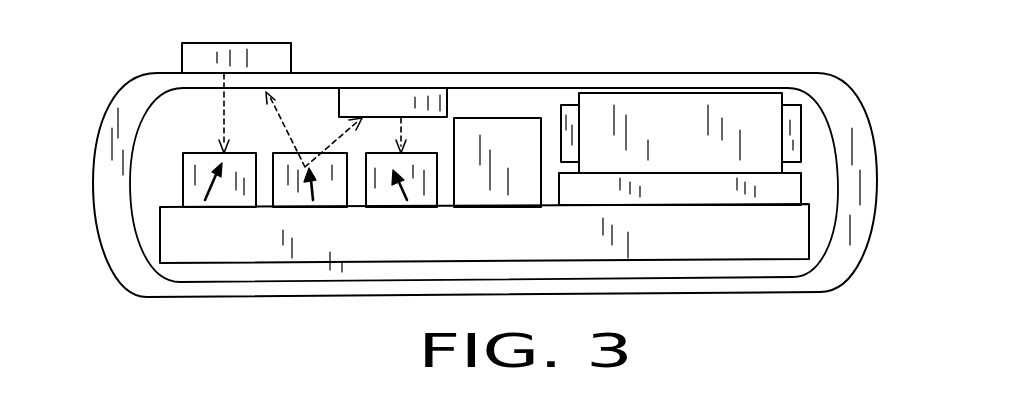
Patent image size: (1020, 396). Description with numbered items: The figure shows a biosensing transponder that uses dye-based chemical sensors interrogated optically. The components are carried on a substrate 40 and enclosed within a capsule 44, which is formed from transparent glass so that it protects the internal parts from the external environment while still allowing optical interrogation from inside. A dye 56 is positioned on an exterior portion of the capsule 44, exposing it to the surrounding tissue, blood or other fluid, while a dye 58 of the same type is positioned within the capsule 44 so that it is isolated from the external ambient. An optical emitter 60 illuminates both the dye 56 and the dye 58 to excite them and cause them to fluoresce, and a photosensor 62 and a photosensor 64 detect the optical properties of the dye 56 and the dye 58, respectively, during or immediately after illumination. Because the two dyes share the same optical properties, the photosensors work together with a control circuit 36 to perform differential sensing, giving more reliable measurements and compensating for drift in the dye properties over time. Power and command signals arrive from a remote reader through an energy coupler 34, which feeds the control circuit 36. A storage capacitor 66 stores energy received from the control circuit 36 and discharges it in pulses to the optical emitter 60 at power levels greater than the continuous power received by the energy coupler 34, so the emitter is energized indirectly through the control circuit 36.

The energy coupler 34 is at (783, 97).
The control circuit 36 is at (802, 186).
The substrate 40 is at (702, 260).
The capsule 44 is at (92, 193).
The dye 56 is at (291, 53).
The dye 58 is at (447, 100).
The optical emitter 60 is at (273, 185).
The photosensor 62 is at (183, 185).
The photosensor 64 is at (366, 185).
The storage capacitor 66 is at (517, 118).